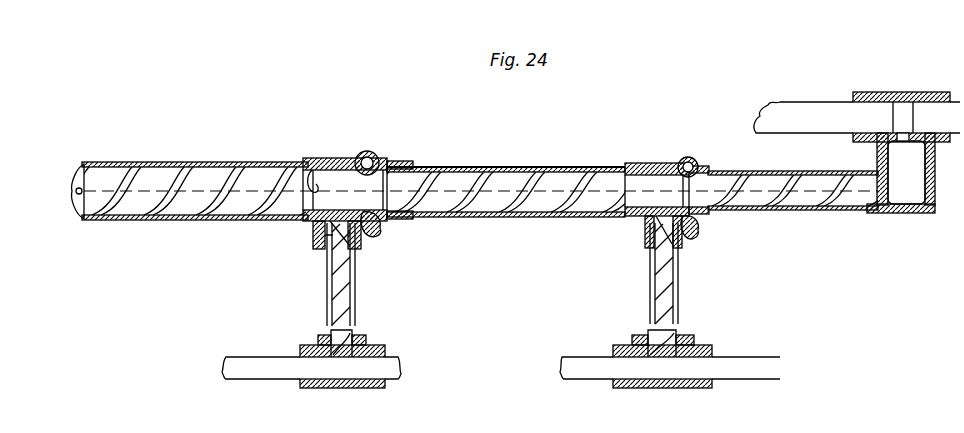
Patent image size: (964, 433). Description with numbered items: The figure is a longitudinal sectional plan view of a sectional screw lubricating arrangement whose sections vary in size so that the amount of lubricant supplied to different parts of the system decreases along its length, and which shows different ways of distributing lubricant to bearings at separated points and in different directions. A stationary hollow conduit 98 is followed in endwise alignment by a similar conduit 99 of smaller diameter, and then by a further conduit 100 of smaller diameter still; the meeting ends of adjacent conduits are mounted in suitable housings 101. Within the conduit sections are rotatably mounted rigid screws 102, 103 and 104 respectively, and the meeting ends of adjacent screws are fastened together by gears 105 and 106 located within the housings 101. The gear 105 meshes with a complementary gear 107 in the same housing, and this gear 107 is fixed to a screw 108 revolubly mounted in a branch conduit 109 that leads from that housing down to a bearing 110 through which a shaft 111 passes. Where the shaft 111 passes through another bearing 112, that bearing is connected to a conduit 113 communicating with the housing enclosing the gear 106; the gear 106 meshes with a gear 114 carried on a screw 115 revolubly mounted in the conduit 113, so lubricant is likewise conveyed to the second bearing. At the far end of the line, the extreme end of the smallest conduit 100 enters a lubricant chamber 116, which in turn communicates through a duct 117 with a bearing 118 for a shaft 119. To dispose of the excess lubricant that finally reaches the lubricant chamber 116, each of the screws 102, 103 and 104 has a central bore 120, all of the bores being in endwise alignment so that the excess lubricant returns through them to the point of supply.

The stationary hollow conduit 98 is at (182, 163).
The conduit 99 is at (513, 170).
The conduit 100 is at (790, 187).
The housings 101 is at (319, 160).
The rigid screw 102 is at (218, 209).
The rigid screw 103 is at (491, 210).
The rigid screw 104 is at (797, 210).
The gear 105 is at (380, 156).
The gear 106 is at (700, 163).
The complementary gear 107 is at (380, 236).
The screw 108 is at (345, 293).
The branch conduit 109 is at (328, 308).
The bearing 110 is at (363, 350).
The shaft 111 is at (256, 357).
The bearing 112 is at (690, 350).
The conduit 113 is at (651, 289).
The gear 114 is at (699, 231).
The screw 115 is at (670, 273).
The lubricant chamber 116 is at (918, 190).
The duct 117 is at (903, 135).
The bearing 118 is at (870, 92).
The shaft 119 is at (800, 109).
The central bore 120 is at (72, 198).